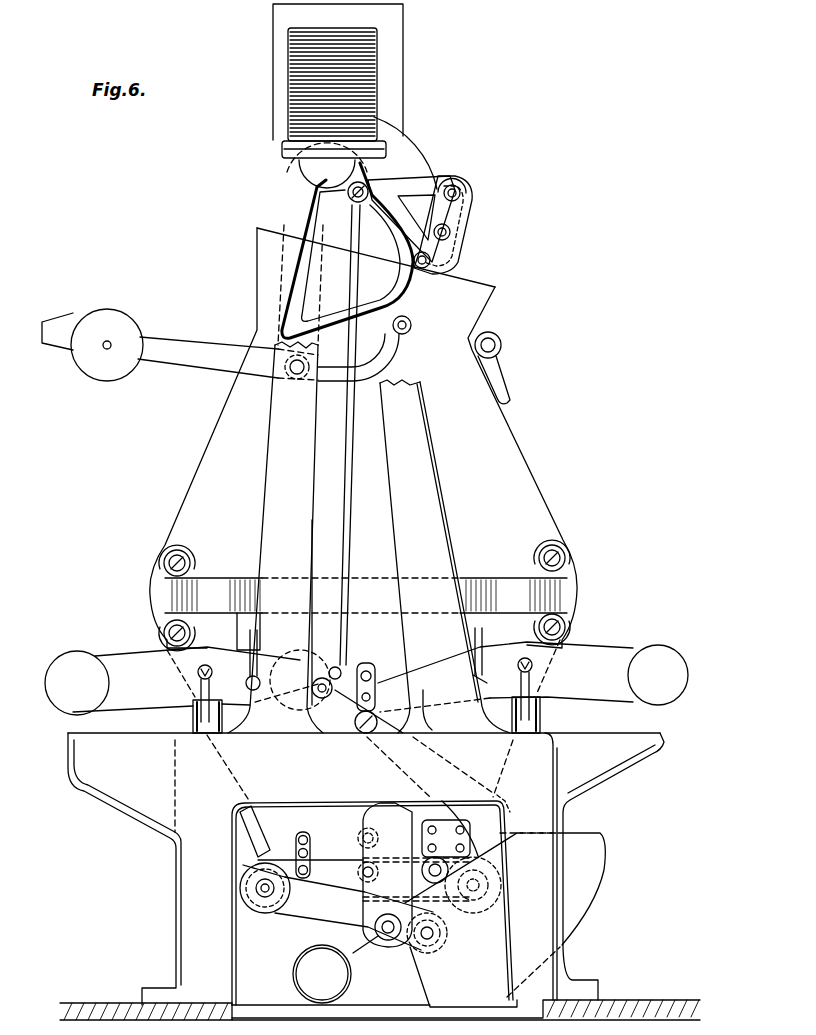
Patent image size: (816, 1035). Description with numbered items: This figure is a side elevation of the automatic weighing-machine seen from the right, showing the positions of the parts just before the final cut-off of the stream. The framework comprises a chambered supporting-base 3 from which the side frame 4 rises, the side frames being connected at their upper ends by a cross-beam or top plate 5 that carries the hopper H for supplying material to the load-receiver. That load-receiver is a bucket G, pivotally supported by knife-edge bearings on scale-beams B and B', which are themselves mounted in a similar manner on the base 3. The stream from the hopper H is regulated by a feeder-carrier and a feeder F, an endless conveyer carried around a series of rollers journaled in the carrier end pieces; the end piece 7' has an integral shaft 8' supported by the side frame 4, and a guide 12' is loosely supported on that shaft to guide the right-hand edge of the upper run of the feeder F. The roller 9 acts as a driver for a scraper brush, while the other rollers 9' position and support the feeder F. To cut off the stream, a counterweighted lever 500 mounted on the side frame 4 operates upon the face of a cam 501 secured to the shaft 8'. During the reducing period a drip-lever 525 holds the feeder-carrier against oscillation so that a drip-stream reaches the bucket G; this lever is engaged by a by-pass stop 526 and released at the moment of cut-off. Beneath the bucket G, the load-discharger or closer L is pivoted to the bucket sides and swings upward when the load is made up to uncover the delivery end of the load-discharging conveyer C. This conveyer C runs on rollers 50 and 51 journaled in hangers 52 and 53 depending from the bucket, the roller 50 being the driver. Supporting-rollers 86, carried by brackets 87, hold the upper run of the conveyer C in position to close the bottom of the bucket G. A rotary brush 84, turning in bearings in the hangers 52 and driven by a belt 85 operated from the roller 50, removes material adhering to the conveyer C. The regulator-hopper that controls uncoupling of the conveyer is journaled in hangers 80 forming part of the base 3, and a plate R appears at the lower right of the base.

The hopper H is at (402, 54).
The cross-beam or top plate 5 is at (334, 108).
The guide 12' is at (369, 153).
The shaft 8' is at (374, 179).
The cam 501 is at (295, 250).
The feeder or endless conveyer F is at (411, 219).
The end piece 7' is at (457, 225).
The roller 9 is at (455, 174).
The rollers 9' is at (454, 246).
The counterweighted lever 500 is at (178, 353).
The drip-lever 525 is at (342, 472).
The side frame 4 is at (432, 470).
The bucket G is at (515, 468).
The by-pass stop 526 is at (340, 668).
The scale-beam B' is at (172, 681).
The scale-beam B is at (533, 677).
The supporting-base 3 is at (190, 896).
The load-discharger or closer L is at (507, 789).
The bracket or hanger 52 is at (245, 848).
The brackets 87 is at (312, 856).
The supporting-rollers 86 is at (358, 872).
The bracket or hanger 53 is at (422, 832).
The hangers 80 is at (382, 878).
The rotary carrier or roller 50 is at (265, 908).
The load-discharging conveyer C is at (325, 928).
The belt 85 is at (350, 926).
The rotary carrier or roller 51 is at (455, 905).
The scraper or rotary brush 84 is at (434, 946).
The plate R is at (463, 977).